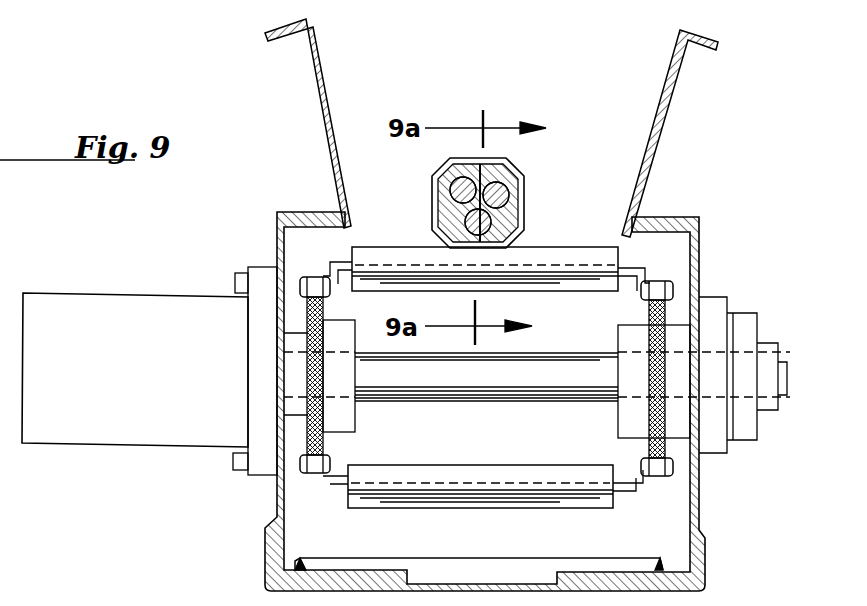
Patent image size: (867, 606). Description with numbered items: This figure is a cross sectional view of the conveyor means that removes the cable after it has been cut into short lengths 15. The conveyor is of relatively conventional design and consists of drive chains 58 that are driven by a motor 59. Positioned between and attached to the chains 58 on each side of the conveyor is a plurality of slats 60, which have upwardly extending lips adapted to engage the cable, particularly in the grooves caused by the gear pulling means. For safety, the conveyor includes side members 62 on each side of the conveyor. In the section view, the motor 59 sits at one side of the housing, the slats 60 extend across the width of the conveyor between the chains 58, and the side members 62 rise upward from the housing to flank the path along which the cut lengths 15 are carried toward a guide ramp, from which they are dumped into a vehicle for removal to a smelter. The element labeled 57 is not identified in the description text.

The short lengths 15 is at (515, 184).
The tie rod bolt 57 is at (665, 322).
The drive chains 58 is at (306, 282).
The motor 59 is at (75, 323).
The slats 60 is at (558, 258).
The side members 62 is at (668, 92).